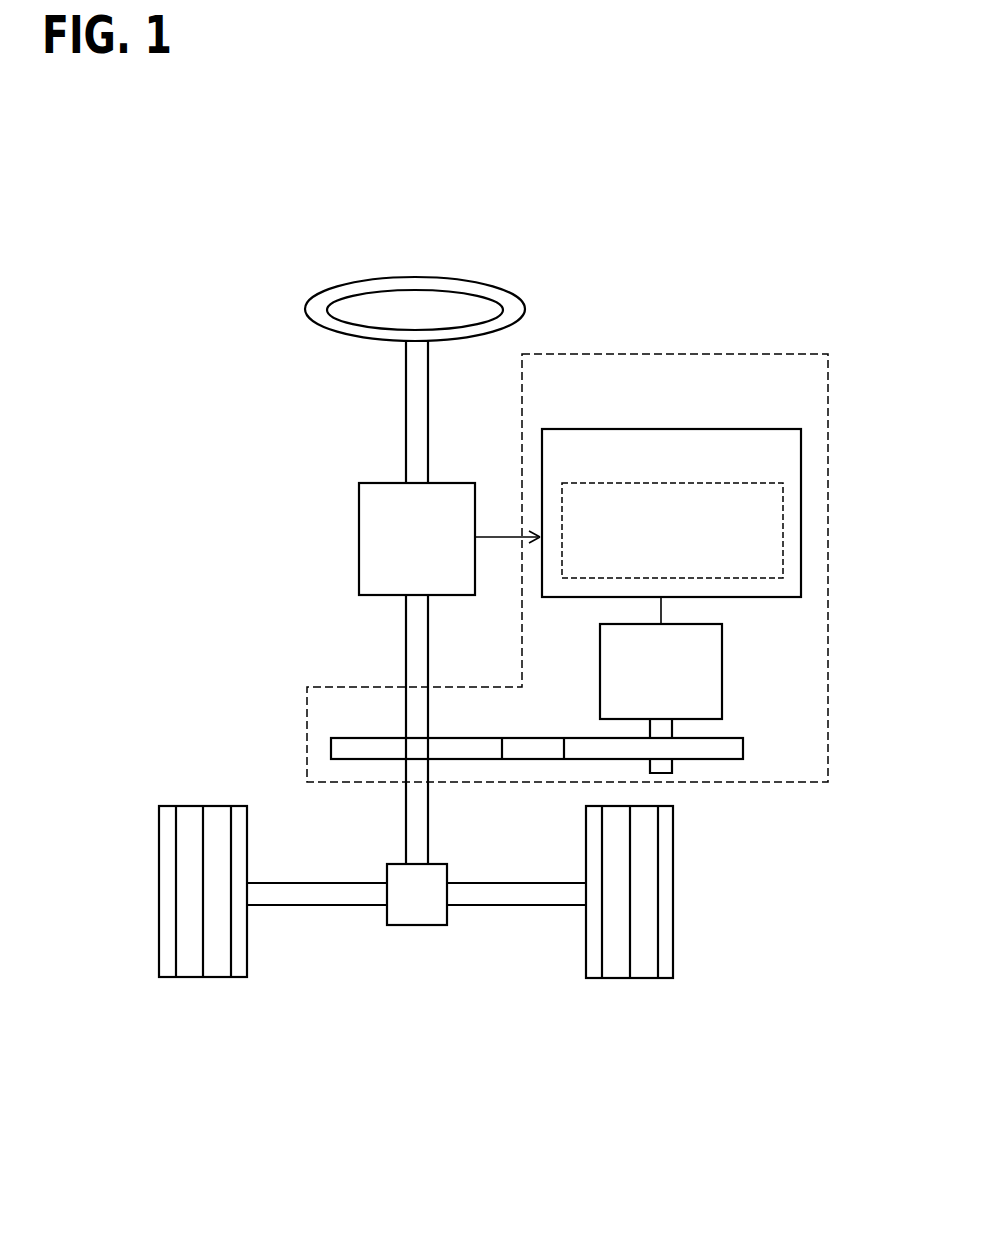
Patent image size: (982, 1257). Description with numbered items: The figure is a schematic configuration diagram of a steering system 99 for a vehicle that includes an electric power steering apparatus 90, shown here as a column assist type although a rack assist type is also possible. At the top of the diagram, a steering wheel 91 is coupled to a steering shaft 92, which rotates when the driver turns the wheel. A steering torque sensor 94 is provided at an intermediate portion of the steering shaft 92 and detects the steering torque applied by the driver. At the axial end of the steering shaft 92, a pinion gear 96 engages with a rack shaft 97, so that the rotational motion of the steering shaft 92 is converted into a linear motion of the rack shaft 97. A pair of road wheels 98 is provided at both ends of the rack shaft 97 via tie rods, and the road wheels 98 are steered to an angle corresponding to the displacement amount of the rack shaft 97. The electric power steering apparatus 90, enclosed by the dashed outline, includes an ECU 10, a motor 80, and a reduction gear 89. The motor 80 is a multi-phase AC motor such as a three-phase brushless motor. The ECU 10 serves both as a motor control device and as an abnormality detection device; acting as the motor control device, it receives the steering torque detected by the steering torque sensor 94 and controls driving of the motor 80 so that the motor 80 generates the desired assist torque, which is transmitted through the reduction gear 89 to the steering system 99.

The ECU 10 is at (667, 429).
The motor 80 is at (722, 670).
The reduction gear 89 is at (743, 745).
The electric power steering apparatus 90 is at (672, 354).
The steering wheel 91 is at (305, 312).
The steering shaft 92 is at (406, 417).
The steering torque sensor 94 is at (359, 536).
The pinion gear 96 is at (407, 925).
The rack shaft 97 is at (310, 905).
The road wheels 98 is at (218, 977).
The steering system 99 is at (363, 1008).